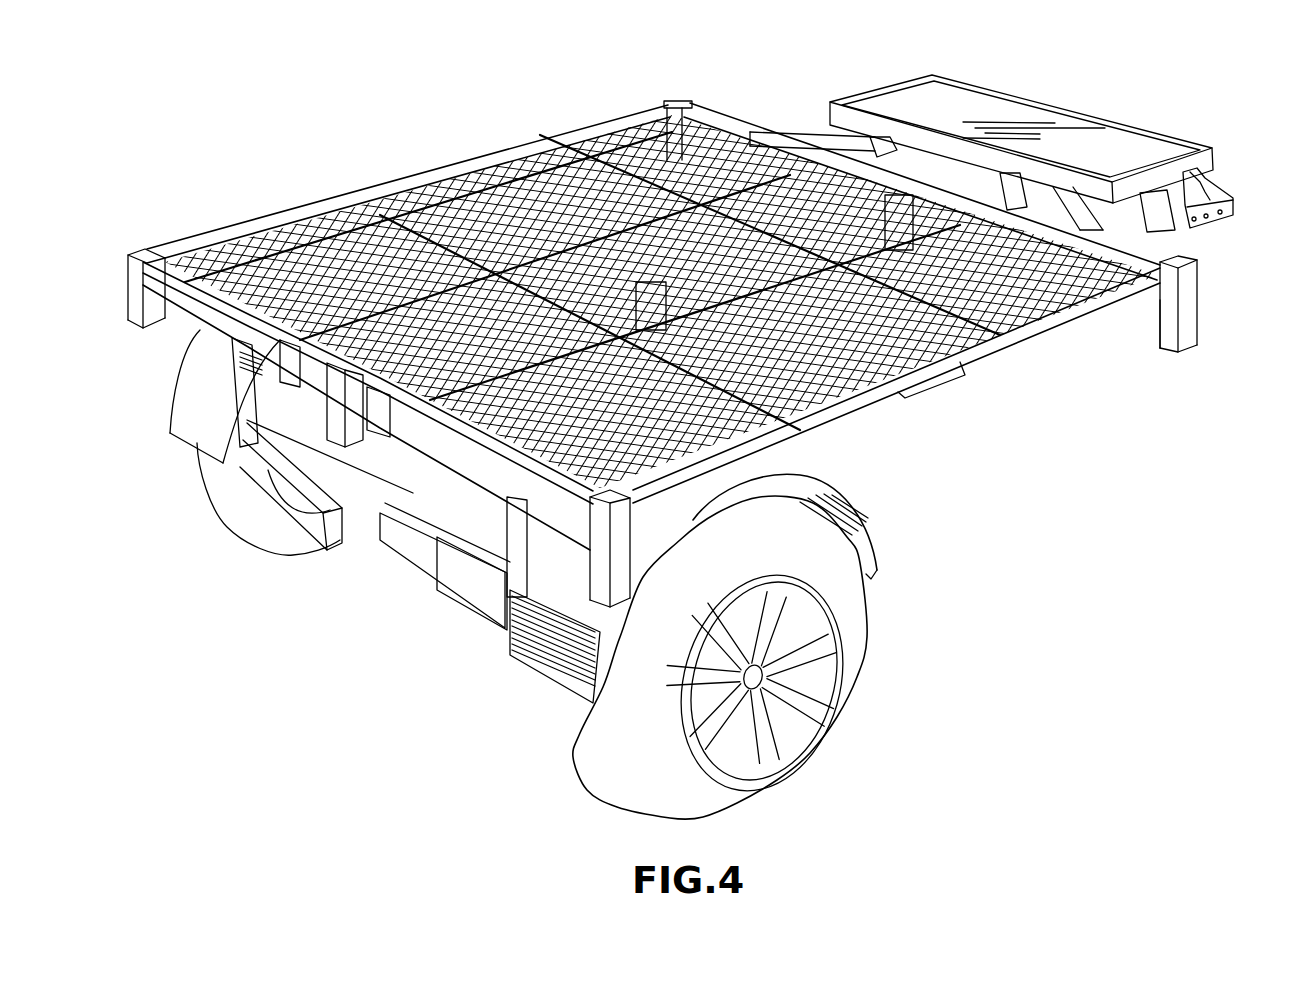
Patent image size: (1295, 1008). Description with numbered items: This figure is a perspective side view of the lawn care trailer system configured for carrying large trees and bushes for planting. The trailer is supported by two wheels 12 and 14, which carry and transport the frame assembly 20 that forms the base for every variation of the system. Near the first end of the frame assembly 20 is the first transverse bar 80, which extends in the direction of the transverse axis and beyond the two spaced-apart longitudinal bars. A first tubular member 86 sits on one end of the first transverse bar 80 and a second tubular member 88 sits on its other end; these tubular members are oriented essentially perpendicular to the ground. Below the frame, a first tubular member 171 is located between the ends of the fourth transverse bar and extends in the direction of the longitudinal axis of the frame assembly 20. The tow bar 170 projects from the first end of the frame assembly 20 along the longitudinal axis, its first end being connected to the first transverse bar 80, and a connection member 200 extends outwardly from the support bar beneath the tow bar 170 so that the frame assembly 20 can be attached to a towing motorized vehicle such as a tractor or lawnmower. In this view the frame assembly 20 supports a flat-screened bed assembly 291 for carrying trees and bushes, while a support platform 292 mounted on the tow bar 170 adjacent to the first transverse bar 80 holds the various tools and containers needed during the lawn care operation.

The wheel 12 is at (252, 517).
The wheel 14 is at (843, 690).
The frame assembly 20 is at (651, 298).
The first transverse bar 80 is at (750, 125).
The first tubular member 86 is at (1178, 357).
The second tubular member 88 is at (688, 100).
The tow bar 170 is at (930, 172).
The first tubular member 171 is at (340, 550).
The connection member 200 is at (1222, 180).
The flat-screened bed assembly 291 is at (540, 135).
The support platform 292 is at (1053, 103).